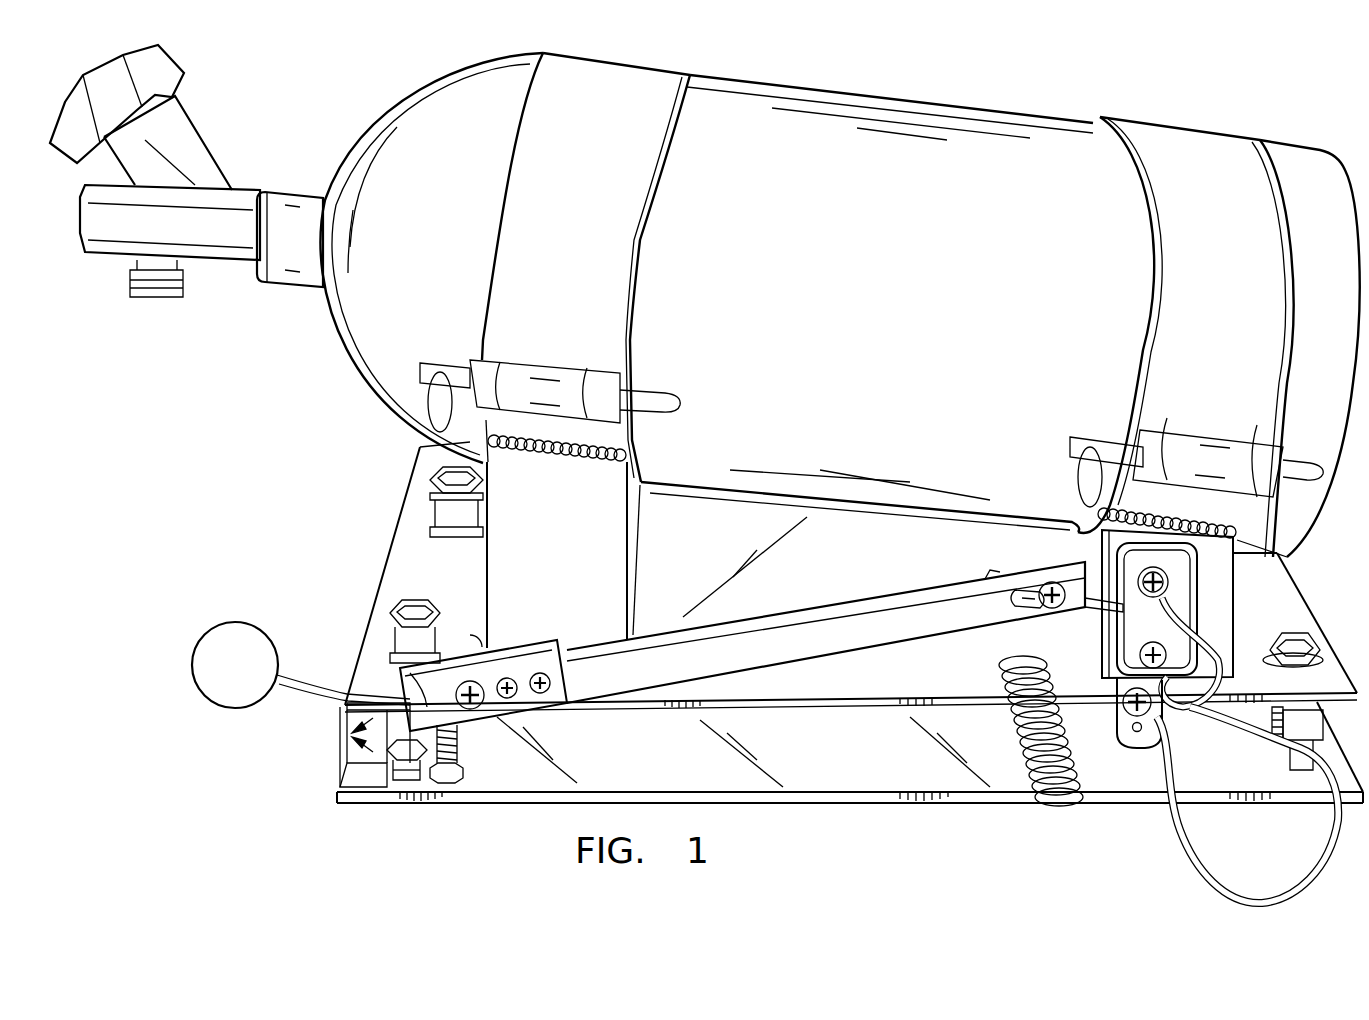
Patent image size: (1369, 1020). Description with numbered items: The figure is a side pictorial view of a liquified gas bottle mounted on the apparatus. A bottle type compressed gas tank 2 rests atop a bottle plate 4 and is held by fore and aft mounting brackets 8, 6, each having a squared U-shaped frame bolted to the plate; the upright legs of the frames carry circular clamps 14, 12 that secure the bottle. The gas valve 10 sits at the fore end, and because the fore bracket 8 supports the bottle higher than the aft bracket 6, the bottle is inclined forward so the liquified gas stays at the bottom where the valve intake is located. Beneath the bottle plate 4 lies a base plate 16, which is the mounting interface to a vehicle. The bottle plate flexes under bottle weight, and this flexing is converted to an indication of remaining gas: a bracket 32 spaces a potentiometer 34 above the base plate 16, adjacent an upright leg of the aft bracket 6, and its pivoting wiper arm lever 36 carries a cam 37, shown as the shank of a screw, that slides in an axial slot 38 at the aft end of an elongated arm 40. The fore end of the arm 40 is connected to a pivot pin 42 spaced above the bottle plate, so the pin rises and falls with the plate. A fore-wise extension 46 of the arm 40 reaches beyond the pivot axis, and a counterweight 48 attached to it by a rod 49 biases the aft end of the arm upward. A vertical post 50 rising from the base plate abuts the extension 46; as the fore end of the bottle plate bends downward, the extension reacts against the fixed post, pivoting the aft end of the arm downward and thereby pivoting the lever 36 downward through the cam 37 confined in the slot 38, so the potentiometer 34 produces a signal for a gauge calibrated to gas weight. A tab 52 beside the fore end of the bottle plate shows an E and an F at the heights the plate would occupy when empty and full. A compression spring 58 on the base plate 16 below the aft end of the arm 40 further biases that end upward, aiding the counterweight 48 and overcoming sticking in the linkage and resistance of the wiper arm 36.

The compressed gas tank 2 is at (839, 305).
The bottle plate 4 is at (855, 815).
The aft mounting bracket 6 is at (1167, 604).
The fore mounting bracket 8 is at (563, 555).
The gas valve 10 is at (192, 147).
The circular clamp 12 is at (1196, 337).
The circular clamp 14 is at (555, 267).
The base plate 16 is at (763, 783).
The bracket 32 is at (1127, 747).
The potentiometer 34 is at (1187, 603).
The wiper arm lever 36 is at (1082, 612).
The cam 37 is at (1027, 593).
The axial slot 38 is at (1023, 577).
The elongated arm 40 is at (826, 632).
The pivot pin 42 is at (470, 678).
The fore-wise extension 46 is at (407, 700).
The counterweight 48 is at (253, 710).
The rod 49 is at (313, 697).
The vertical post 50 is at (462, 745).
The tab 52 is at (343, 747).
The compression spring 58 is at (1043, 803).